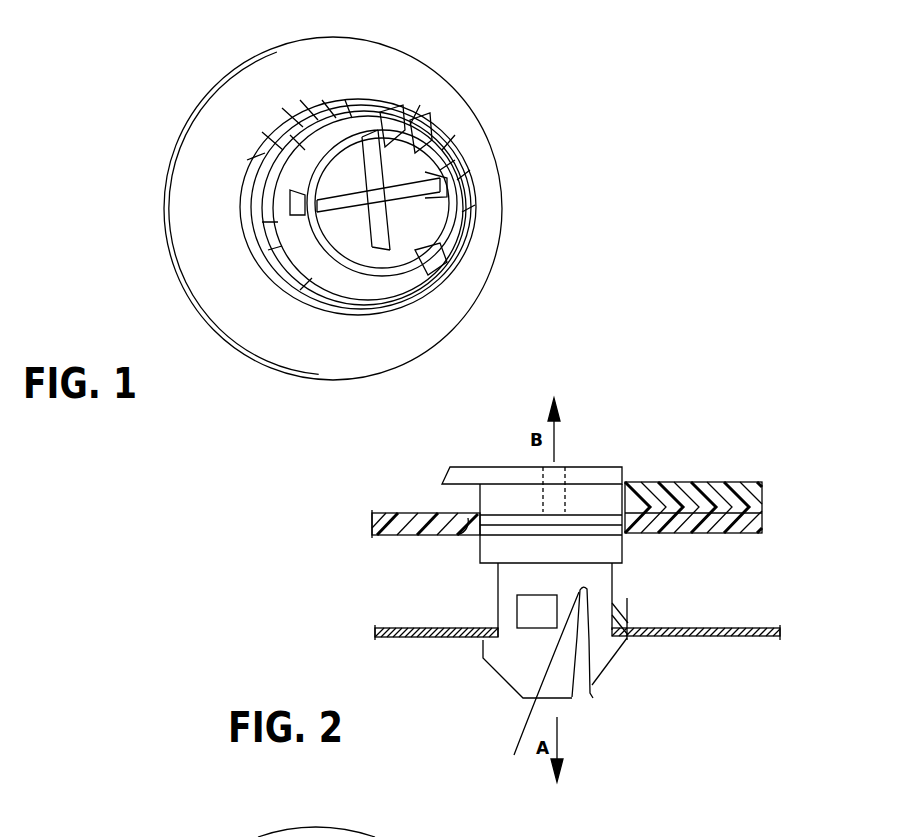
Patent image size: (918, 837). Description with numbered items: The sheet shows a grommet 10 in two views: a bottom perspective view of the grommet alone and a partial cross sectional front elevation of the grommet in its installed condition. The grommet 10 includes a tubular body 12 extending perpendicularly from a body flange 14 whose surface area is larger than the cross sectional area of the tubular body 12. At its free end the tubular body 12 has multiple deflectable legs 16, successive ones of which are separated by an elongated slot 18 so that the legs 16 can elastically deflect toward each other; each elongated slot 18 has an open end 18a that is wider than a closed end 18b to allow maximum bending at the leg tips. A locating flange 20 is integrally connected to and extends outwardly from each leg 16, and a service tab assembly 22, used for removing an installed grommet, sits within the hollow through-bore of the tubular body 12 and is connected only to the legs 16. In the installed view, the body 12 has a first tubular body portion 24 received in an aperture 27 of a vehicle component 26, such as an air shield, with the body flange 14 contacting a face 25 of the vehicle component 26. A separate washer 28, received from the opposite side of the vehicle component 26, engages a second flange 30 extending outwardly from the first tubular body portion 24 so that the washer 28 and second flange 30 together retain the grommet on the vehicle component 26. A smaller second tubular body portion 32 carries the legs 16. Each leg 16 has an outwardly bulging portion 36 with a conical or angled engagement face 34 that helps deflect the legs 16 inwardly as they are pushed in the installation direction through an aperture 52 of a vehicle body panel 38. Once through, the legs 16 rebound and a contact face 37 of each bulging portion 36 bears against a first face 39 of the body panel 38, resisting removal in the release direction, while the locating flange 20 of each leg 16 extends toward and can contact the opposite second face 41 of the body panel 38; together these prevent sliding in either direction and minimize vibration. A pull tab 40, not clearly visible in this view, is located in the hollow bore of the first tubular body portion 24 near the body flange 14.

In FIG. 1, the grommet 10 is at (519, 82).
In FIG. 2, the grommet 10 is at (690, 417).
In FIG. 1, the tubular body 12 is at (240, 197).
In FIG. 2, the tubular body 12 is at (480, 500).
In FIG. 1, the body flange 14 is at (455, 301).
In FIG. 2, the body flange 14 is at (480, 467).
In FIG. 1, the deflectable legs 16 is at (330, 117).
In FIG. 2, the deflectable legs 16 is at (537, 672).
In FIG. 1, the elongated slot 18 is at (427, 267).
In FIG. 2, the elongated slot 18 is at (580, 680).
In FIG. 2, the open end 18a is at (593, 690).
In FIG. 2, the closed end 18b is at (520, 740).
In FIG. 1, the locating flange 20 is at (290, 135).
In FIG. 2, the locating flange 20 is at (553, 598).
In FIG. 1, the service tab assembly 22 is at (443, 197).
In FIG. 2, the first tubular body portion 24 is at (632, 496).
In FIG. 2, the face 25 is at (733, 478).
In FIG. 2, the vehicle component 26 is at (765, 495).
In FIG. 2, the aperture 27 is at (650, 497).
In FIG. 2, the washer 28 is at (690, 533).
In FIG. 2, the second flange 30 is at (465, 530).
In FIG. 2, the second tubular body portion 32 is at (505, 580).
In FIG. 2, the engagement face 34 is at (488, 685).
In FIG. 2, the bulging portion 36 is at (616, 664).
In FIG. 2, the contact face 37 is at (486, 628).
In FIG. 2, the vehicle body panel 38 is at (450, 640).
In FIG. 2, the first face 39 is at (733, 642).
In FIG. 2, the pull tab 40 is at (585, 488).
In FIG. 2, the second face 41 is at (755, 621).
In FIG. 2, the aperture 52 is at (610, 643).